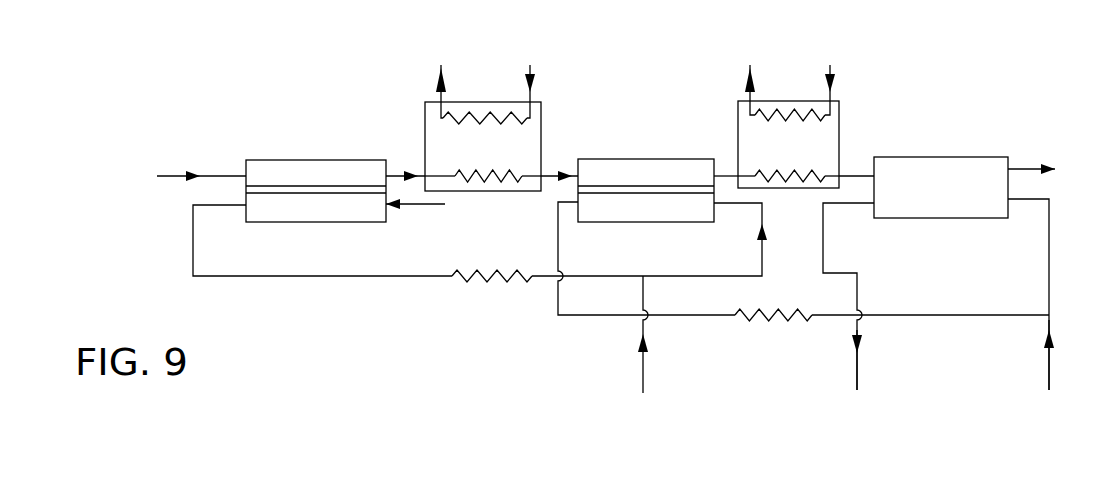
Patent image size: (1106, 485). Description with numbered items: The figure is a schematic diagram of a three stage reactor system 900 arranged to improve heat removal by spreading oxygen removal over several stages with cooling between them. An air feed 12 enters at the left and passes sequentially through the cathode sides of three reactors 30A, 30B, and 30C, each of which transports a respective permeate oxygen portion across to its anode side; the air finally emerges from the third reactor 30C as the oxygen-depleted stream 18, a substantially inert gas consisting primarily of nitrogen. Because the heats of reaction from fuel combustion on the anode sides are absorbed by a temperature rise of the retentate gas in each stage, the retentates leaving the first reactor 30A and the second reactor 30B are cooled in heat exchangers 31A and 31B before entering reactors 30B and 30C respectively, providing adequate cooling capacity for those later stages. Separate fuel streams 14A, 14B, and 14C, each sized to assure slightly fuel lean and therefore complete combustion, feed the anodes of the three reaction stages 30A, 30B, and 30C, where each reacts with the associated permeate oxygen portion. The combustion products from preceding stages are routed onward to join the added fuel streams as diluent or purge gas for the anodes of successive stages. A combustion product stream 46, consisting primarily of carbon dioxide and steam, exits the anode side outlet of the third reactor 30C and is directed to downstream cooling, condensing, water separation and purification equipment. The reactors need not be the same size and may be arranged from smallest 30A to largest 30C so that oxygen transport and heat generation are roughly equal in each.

The three stage system 900 is at (423, 314).
The air feed 12 is at (175, 172).
The first reactor 30A is at (262, 160).
The first heat exchanger 31A is at (425, 122).
The first fuel stream 14A is at (405, 206).
The second reactor 30B is at (600, 159).
The second heat exchanger 31B is at (839, 121).
The third reactor 30C is at (905, 157).
The oxygen-depleted stream 18 is at (1022, 168).
The second fuel stream 14B is at (644, 368).
The combustion product stream 46 is at (856, 367).
The third fuel stream 14C is at (1048, 363).